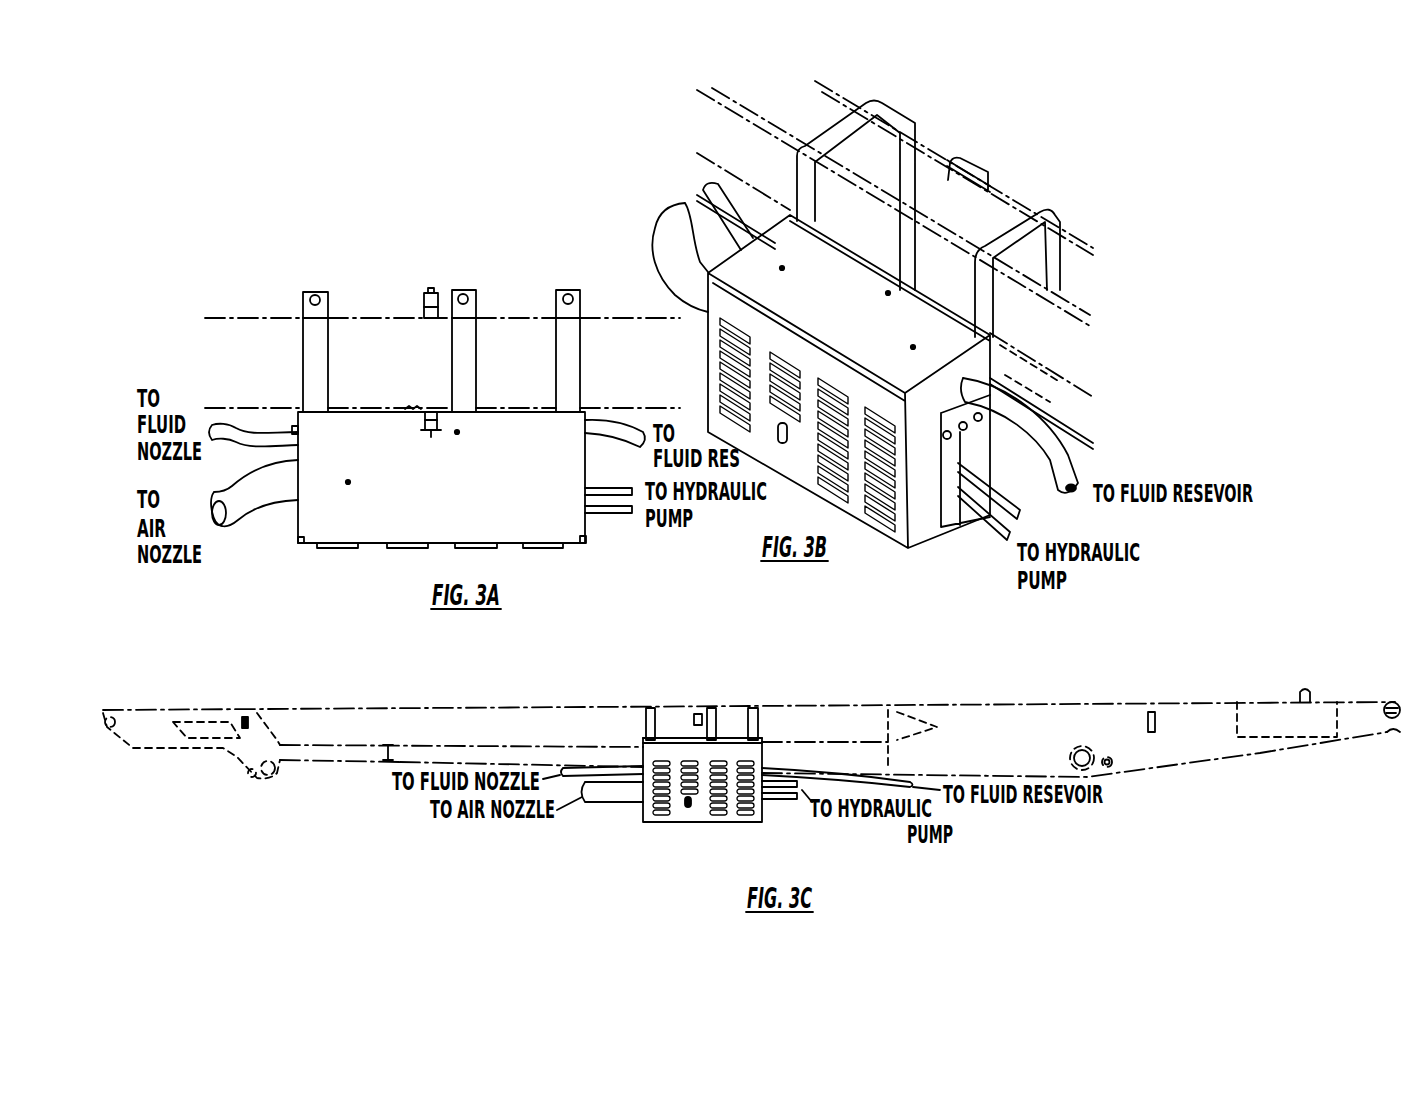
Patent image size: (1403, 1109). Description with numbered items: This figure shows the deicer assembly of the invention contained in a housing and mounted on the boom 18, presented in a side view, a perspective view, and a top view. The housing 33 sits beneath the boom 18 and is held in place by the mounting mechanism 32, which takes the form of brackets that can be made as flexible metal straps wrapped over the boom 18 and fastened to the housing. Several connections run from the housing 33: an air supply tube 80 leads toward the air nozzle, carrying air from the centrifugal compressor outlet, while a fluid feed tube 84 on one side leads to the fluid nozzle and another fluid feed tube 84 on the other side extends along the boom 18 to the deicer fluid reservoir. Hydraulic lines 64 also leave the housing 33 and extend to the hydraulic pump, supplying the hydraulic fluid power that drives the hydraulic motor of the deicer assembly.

In FIG. 3A, the boom 18 is at (372, 335).
In FIG. 3B, the boom 18 is at (990, 212).
In FIG. 3C, the boom 18 is at (822, 715).
In FIG. 3A, the mounting mechanism 32 is at (320, 310).
In FIG. 3B, the mounting mechanism 32 is at (963, 177).
In FIG. 3C, the mounting mechanism 32 is at (753, 713).
In FIG. 3A, the control box 33 is at (442, 492).
In FIG. 3B, the control box 33 is at (855, 307).
In FIG. 3C, the control box 33 is at (687, 757).
In FIG. 3A, the hydraulic lines 64 is at (600, 490).
In FIG. 3B, the hydraulic lines 64 is at (1005, 505).
In FIG. 3C, the hydraulic lines 64 is at (785, 800).
In FIG. 3A, the air supply tube 80 is at (234, 517).
In FIG. 3B, the air supply tube 80 is at (672, 228).
In FIG. 3C, the air supply tube 80 is at (612, 795).
In FIG. 3A, the fluid feed tube 84 is at (240, 432).
In FIG. 3B, the fluid feed tube 84 is at (716, 193).
In FIG. 3C, the fluid feed tube 84 is at (580, 772).